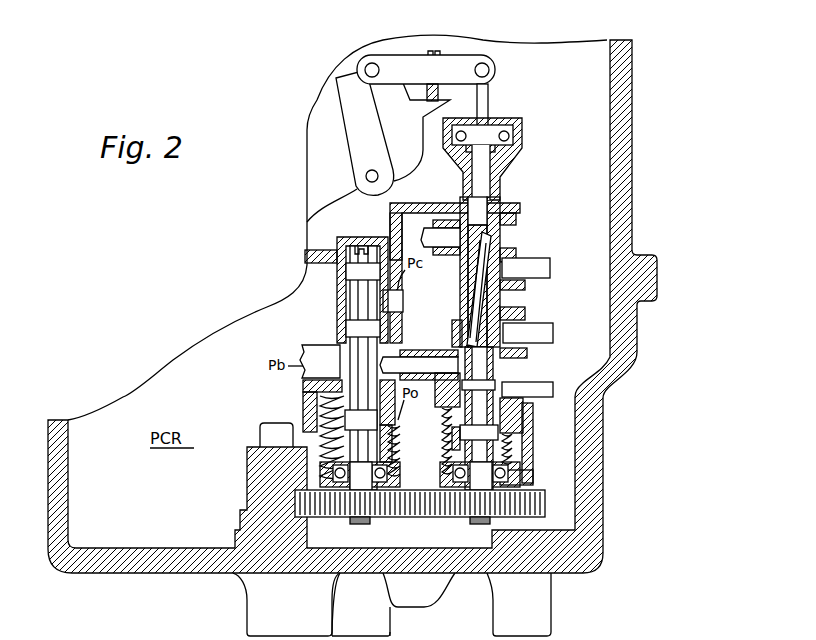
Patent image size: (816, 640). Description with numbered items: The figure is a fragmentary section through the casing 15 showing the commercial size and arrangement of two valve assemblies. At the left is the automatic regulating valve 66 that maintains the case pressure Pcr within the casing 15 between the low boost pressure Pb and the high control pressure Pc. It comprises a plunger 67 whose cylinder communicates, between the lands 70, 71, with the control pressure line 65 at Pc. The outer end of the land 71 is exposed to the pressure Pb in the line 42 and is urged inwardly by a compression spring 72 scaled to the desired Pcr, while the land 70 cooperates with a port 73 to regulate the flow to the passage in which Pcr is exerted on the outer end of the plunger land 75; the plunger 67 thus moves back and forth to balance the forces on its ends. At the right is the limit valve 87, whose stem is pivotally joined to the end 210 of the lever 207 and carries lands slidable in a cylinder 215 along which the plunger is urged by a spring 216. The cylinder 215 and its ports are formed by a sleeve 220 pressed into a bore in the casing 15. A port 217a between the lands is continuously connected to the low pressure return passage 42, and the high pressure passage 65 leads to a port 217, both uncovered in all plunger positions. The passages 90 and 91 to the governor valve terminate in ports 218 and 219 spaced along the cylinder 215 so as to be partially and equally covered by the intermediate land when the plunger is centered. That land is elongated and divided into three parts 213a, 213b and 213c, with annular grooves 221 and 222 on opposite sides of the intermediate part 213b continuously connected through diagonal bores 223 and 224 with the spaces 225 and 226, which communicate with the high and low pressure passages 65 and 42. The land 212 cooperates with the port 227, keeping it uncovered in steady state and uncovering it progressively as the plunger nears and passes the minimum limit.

The casing 15 is at (626, 205).
The lever 207 is at (370, 62).
The pinion 210 is at (490, 70).
The sleeve 220 is at (505, 202).
The limit valve 87 is at (573, 175).
The control pressure line 65 is at (405, 222).
The cylinder 215 is at (466, 197).
The space 225 is at (506, 225).
The port 217 is at (462, 240).
The port 218 is at (512, 250).
The diagonally extending bore 223 is at (526, 268).
The passage 90 is at (551, 268).
The annular groove 221 is at (512, 294).
The annular groove 222 is at (512, 308).
The port 219 is at (500, 337).
The passage 91 is at (552, 333).
The land part 213a is at (468, 265).
The intermediate land part 213b is at (464, 300).
The diagonally extending bore 224 is at (464, 318).
The land part 213c is at (460, 332).
The port 73 is at (392, 328).
The automatic regulating valve 66 is at (326, 363).
The plunger 67 is at (358, 299).
The land 71 is at (352, 273).
The land 70 is at (355, 325).
The line 42 is at (395, 412).
The plunger land 75 is at (398, 431).
The compression spring 72 is at (396, 451).
The port 217a is at (419, 365).
The space 226 is at (512, 368).
The land 212 is at (527, 389).
The port 227 is at (523, 400).
The spring 216 is at (522, 442).